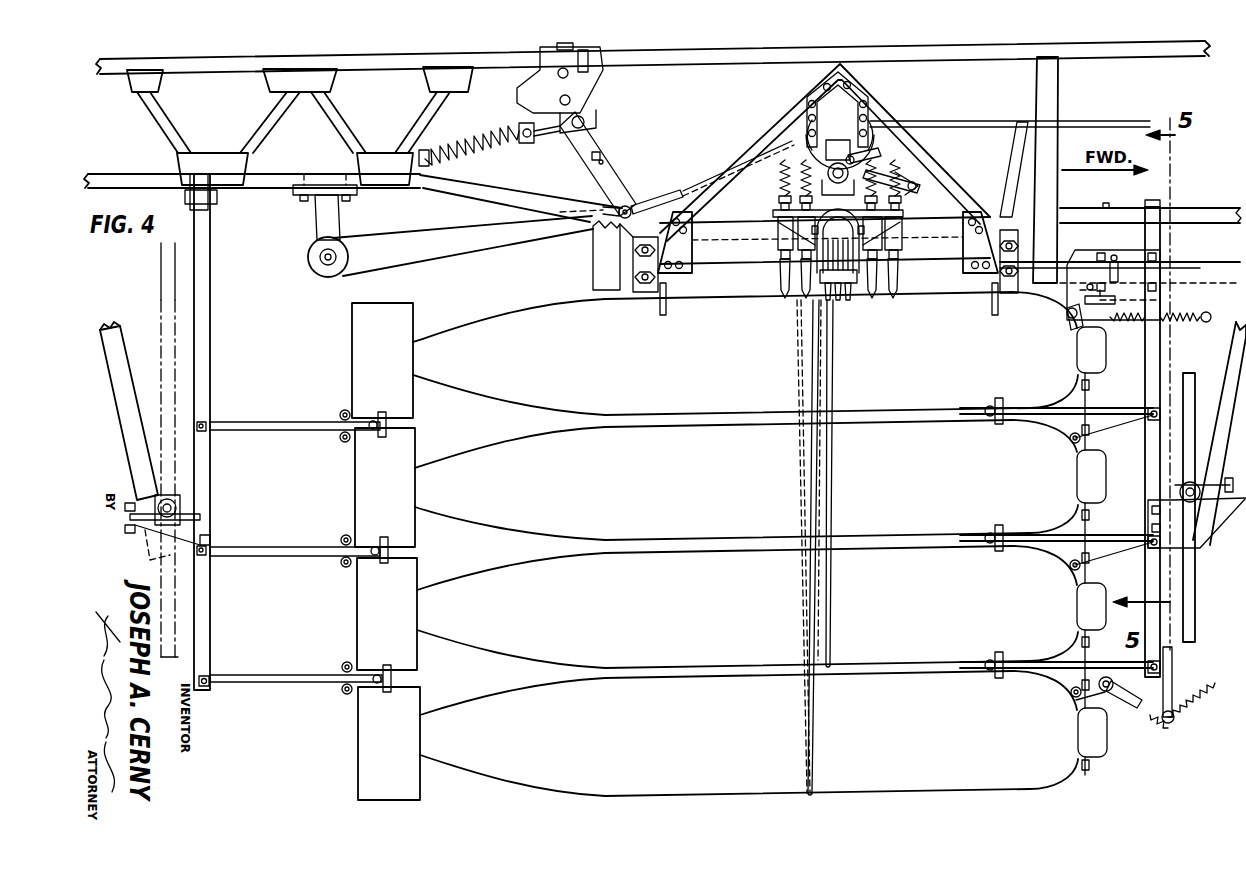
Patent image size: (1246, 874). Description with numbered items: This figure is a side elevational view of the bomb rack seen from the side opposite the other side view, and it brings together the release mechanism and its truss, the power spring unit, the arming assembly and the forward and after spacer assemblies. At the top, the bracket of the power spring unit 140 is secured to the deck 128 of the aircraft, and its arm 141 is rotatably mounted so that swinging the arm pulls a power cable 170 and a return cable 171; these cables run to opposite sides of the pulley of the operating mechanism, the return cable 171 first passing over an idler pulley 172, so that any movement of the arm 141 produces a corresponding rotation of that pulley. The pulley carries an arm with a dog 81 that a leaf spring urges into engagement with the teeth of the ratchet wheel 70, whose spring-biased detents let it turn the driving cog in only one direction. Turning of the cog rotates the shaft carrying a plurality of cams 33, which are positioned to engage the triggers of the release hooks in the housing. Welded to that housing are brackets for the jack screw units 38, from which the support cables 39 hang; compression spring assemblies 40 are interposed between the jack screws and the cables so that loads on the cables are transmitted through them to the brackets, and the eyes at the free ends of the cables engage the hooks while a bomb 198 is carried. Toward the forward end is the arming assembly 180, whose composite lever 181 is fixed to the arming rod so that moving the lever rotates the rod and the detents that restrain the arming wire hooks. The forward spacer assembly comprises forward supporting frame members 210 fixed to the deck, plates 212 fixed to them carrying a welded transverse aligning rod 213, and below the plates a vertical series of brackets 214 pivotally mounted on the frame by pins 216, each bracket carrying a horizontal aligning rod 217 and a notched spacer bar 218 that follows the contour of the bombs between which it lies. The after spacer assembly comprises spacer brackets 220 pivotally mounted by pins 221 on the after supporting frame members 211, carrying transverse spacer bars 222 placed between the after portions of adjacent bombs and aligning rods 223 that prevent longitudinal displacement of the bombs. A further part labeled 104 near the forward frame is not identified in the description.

The deck 128 is at (943, 50).
The power spring unit 140 is at (594, 94).
The arm 141 is at (610, 176).
The power cable 170 is at (688, 190).
The return cable 171 is at (457, 227).
The idler pulley 172 is at (322, 273).
The ratchet wheel 70 is at (803, 137).
The cams 33 is at (860, 153).
The dog 81 is at (914, 178).
The jack screw units 38 is at (782, 172).
The compression spring assemblies 40 is at (790, 240).
The support cables 39 is at (838, 545).
The composite lever 181 is at (1105, 207).
The arming assembly 180 is at (1166, 268).
The plates 212 is at (1118, 302).
The transverse aligning rod 213 is at (1068, 318).
The spring 104 is at (1187, 321).
The forward supporting frame members 210 is at (1150, 380).
The after supporting frame members 211 is at (192, 432).
The spacer brackets 220 is at (234, 422).
The pins 221 is at (210, 432).
The spacer bars 222 is at (392, 420).
The aligning rods 223 is at (340, 414).
The bomb 198 is at (507, 322).
The spacer bar 218 is at (990, 418).
The horizontal aligning rod 217 is at (1070, 440).
The brackets 214 is at (1095, 432).
The pins 216 is at (1160, 415).